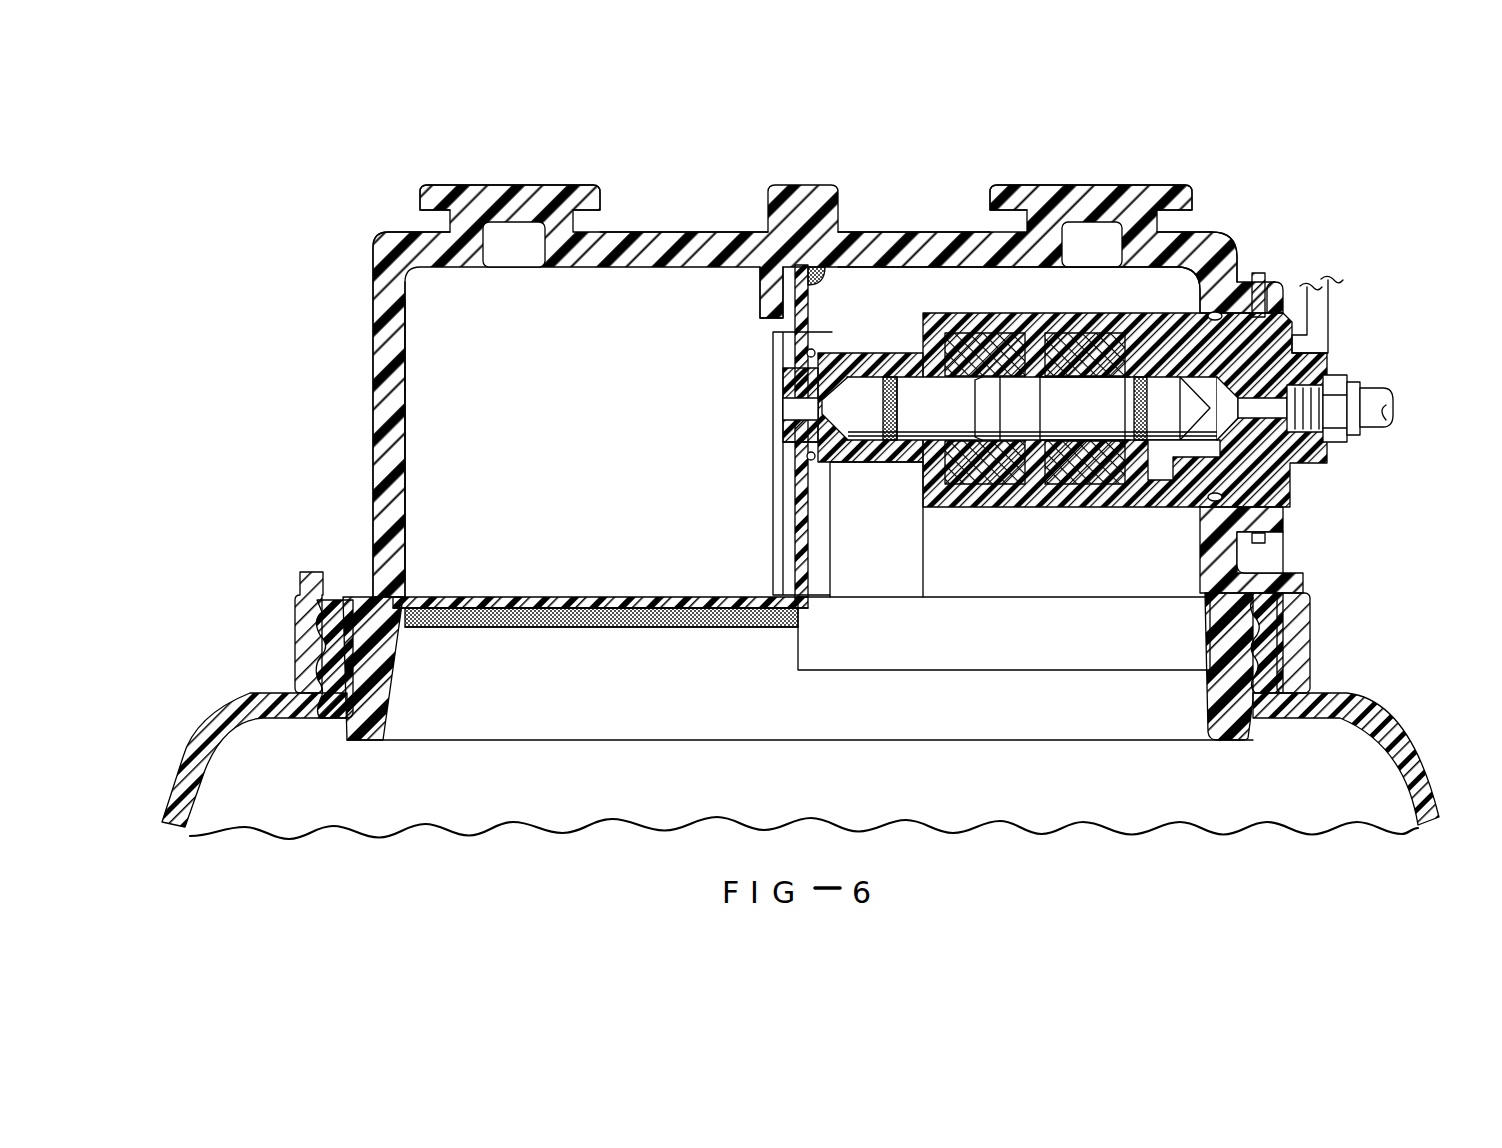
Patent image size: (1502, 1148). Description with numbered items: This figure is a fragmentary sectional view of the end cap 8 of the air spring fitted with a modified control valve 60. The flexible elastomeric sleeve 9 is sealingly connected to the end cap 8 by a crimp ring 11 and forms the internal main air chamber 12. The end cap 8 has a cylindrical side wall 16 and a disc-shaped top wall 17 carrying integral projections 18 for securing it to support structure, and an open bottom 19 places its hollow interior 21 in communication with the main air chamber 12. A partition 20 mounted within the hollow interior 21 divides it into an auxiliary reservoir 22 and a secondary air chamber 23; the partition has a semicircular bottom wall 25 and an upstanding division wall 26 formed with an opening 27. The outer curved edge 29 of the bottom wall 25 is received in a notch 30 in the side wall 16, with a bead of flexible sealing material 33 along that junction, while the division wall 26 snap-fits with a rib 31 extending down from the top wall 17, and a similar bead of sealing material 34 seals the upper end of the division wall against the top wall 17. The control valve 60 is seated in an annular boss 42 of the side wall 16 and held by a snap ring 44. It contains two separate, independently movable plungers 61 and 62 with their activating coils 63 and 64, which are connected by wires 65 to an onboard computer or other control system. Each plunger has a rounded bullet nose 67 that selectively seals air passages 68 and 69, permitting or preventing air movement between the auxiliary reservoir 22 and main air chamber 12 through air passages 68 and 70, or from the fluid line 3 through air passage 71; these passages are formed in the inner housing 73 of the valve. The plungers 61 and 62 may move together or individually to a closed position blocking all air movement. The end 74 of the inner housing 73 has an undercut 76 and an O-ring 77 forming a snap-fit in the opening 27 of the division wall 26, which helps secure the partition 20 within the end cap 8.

The fluid line 3 is at (1372, 395).
The end cap 8 is at (366, 297).
The flexible elastomeric sleeve 9 is at (1418, 763).
The crimp ring 11 is at (300, 638).
The main air chamber 12 is at (1335, 788).
The cylindrical side wall 16 is at (380, 347).
The top wall 17 is at (670, 238).
The projections 18 is at (499, 190).
The open bottom 19 is at (441, 718).
The partition 20 is at (600, 606).
The hollow interior 21 is at (446, 413).
The auxiliary reservoir 22 is at (452, 446).
The secondary air chamber 23 is at (915, 290).
The bottom wall 25 is at (486, 612).
The division wall 26 is at (806, 555).
The opening 27 is at (790, 445).
The outer curved edge 29 is at (407, 602).
The notch 30 is at (396, 602).
The rib 31 is at (765, 292).
The bead of flexible sealing material 33 is at (541, 622).
The bead of sealing material 34 is at (817, 282).
The annular boss 42 is at (1281, 297).
The snap ring 44 is at (1257, 275).
The modified control valve 60 is at (933, 516).
The plunger 61 is at (917, 417).
The plunger 62 is at (1073, 418).
The activating coil 63 is at (998, 476).
The activating coil 64 is at (1108, 476).
The wires 65 is at (1328, 296).
The rounded bullet nose 67 is at (1188, 408).
The air passage 68 is at (797, 410).
The air passage 69 is at (1228, 418).
The air passage 70 is at (863, 452).
The air passage 71 is at (1160, 490).
The inner housing 73 is at (962, 514).
The end 74 is at (783, 385).
The undercut 76 is at (800, 352).
The O-ring 77 is at (812, 460).